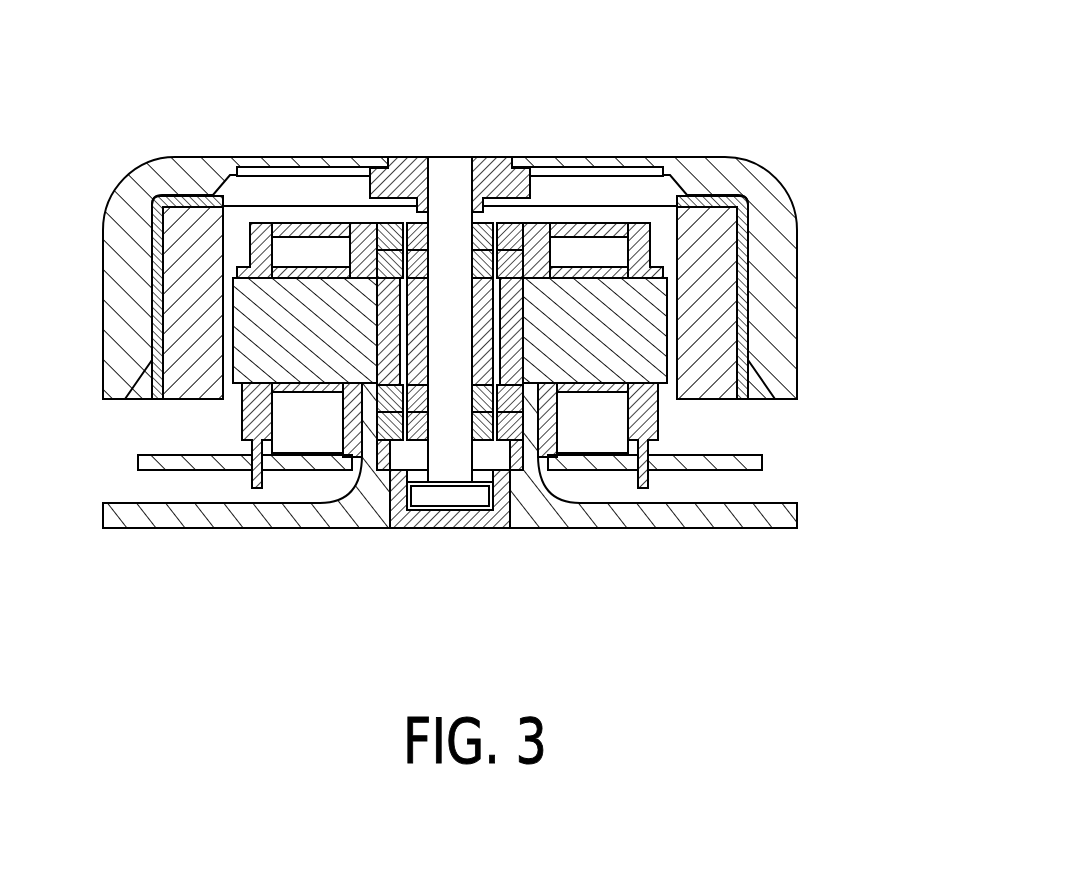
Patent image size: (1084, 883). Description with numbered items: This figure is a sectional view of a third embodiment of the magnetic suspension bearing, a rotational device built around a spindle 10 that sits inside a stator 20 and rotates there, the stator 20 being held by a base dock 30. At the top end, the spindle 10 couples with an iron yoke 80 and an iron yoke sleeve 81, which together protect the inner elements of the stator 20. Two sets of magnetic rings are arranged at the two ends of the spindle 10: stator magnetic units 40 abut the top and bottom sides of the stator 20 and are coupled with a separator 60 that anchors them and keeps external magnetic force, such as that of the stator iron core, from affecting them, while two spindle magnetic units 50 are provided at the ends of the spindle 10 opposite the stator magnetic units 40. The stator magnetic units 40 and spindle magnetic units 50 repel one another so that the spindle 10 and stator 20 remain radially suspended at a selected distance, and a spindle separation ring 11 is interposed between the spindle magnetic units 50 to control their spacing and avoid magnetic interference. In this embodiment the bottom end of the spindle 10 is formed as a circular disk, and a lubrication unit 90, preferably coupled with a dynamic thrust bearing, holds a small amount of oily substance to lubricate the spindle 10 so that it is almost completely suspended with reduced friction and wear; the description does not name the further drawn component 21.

The spindle 10 is at (449, 165).
The spindle separation ring 11 is at (478, 336).
The stator 20 is at (233, 353).
The stator 21 is at (388, 348).
The base dock 30 is at (810, 473).
The stator magnetic units 40 is at (385, 442).
The spindle magnetic units 50 is at (397, 450).
The separator 60 is at (372, 240).
The iron yoke 80 is at (489, 175).
The iron yoke sleeve 81 is at (718, 168).
The lubrication unit 90 is at (482, 515).